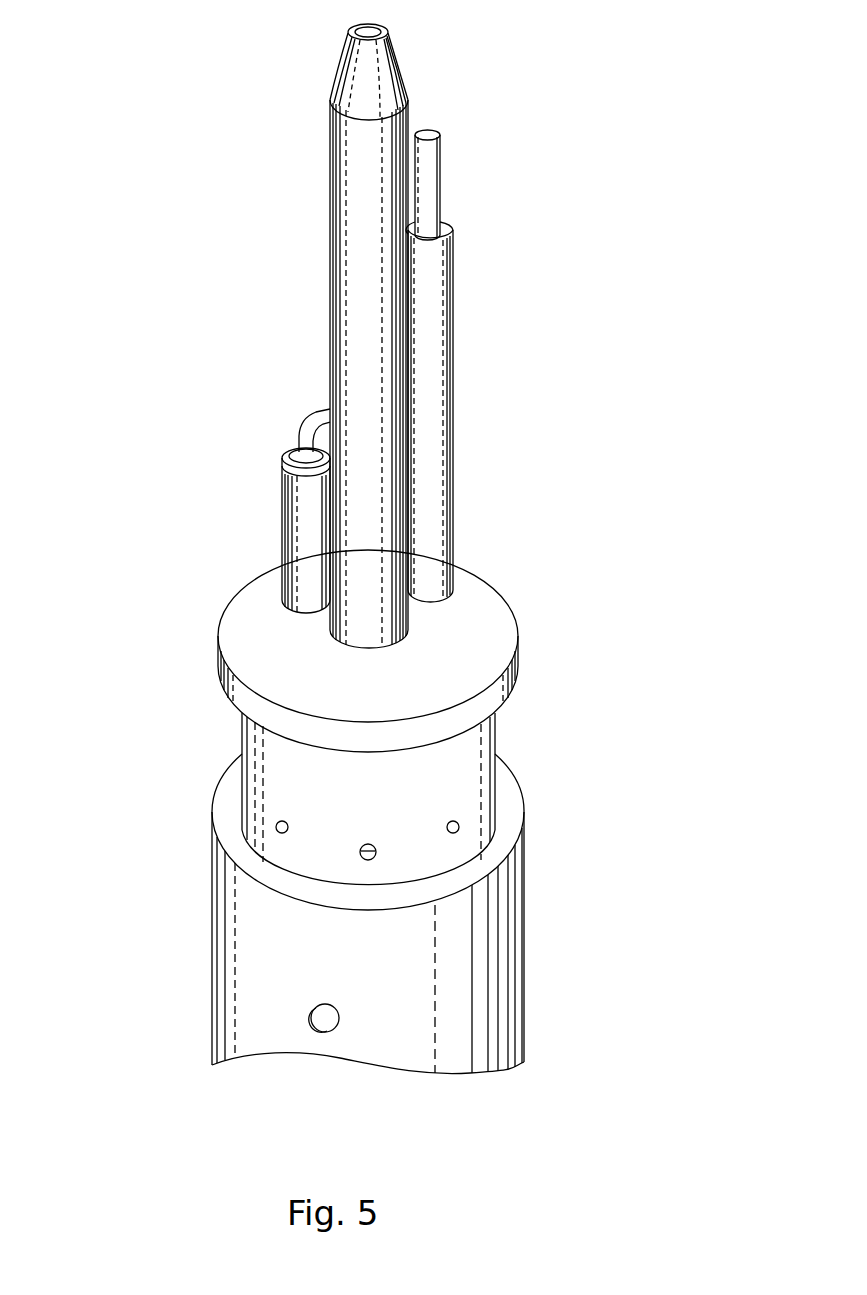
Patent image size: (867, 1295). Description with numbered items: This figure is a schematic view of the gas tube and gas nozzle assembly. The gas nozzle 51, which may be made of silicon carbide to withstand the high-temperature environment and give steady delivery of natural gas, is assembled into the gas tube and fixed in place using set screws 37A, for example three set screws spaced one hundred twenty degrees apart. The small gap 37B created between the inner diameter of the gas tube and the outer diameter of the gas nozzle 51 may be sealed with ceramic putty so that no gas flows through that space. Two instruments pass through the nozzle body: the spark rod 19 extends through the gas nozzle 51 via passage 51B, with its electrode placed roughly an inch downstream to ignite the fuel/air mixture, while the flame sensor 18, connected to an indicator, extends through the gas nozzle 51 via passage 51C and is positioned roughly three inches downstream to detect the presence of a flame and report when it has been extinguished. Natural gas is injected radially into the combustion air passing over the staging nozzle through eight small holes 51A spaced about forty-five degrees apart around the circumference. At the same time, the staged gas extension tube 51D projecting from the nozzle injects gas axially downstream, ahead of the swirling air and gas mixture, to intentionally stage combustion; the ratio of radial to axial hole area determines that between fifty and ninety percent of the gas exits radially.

The gas nozzle 51 is at (265, 573).
The staged gas extension tube 51D is at (326, 102).
The flame sensor 18 is at (456, 307).
The spark rod 19 is at (276, 486).
The spark rod passage of the gas nozzle 51B is at (276, 599).
The flame sensor passage of the gas nozzle 51C is at (456, 581).
The gap 37B is at (240, 819).
The small holes 51A is at (463, 826).
The set screws 37A is at (308, 1017).